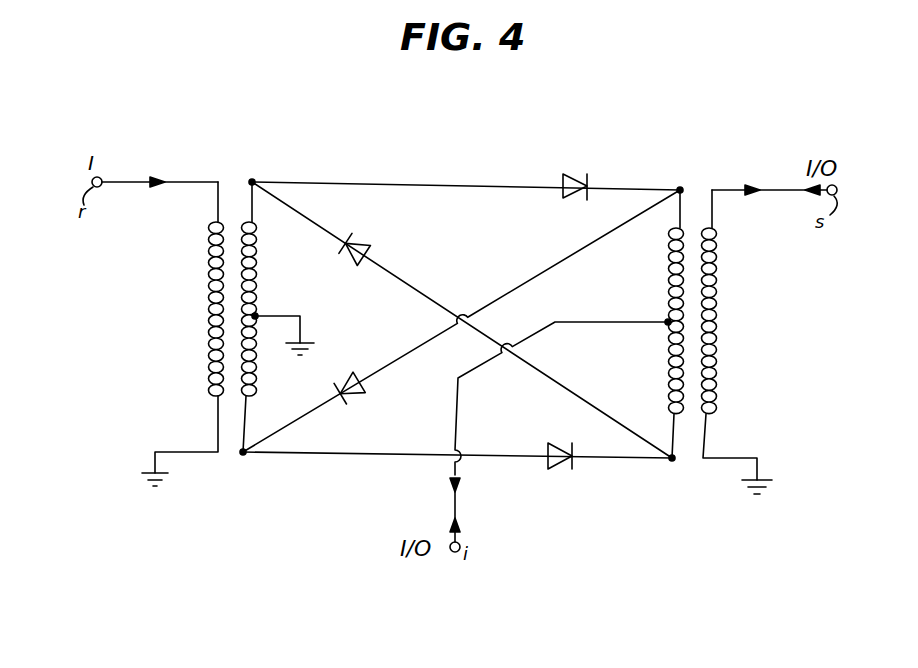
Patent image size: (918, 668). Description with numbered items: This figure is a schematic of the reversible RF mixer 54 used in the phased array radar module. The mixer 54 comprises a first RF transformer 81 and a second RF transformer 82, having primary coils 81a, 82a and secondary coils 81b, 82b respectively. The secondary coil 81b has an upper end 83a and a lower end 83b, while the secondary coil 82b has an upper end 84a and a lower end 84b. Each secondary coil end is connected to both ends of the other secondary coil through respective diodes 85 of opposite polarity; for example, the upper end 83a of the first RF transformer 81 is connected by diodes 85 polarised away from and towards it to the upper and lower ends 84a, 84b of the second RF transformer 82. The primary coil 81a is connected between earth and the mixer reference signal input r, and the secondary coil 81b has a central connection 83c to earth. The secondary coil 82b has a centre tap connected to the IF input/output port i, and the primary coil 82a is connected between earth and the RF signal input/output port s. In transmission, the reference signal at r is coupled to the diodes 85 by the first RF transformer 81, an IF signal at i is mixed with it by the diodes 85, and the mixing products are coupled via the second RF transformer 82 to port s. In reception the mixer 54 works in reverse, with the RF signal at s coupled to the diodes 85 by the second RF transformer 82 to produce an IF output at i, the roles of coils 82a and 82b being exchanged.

The RF mixer 54 is at (406, 168).
The first RF transformer 81 is at (238, 190).
The primary coil of first RF transformer 81a is at (208, 292).
The secondary coil of first RF transformer 81b is at (258, 284).
The second RF transformer 82 is at (697, 190).
The primary coil of second RF transformer 82a is at (717, 290).
The secondary coil of second RF transformer 82b is at (668, 282).
The upper end of first secondary coil 83a is at (256, 178).
The lower end of first secondary coil 83b is at (243, 455).
The central connection of first secondary coil 83c is at (302, 326).
The upper end of second secondary coil 84a is at (680, 186).
The lower end of second secondary coil 84b is at (672, 460).
The diodes 85 is at (571, 178).